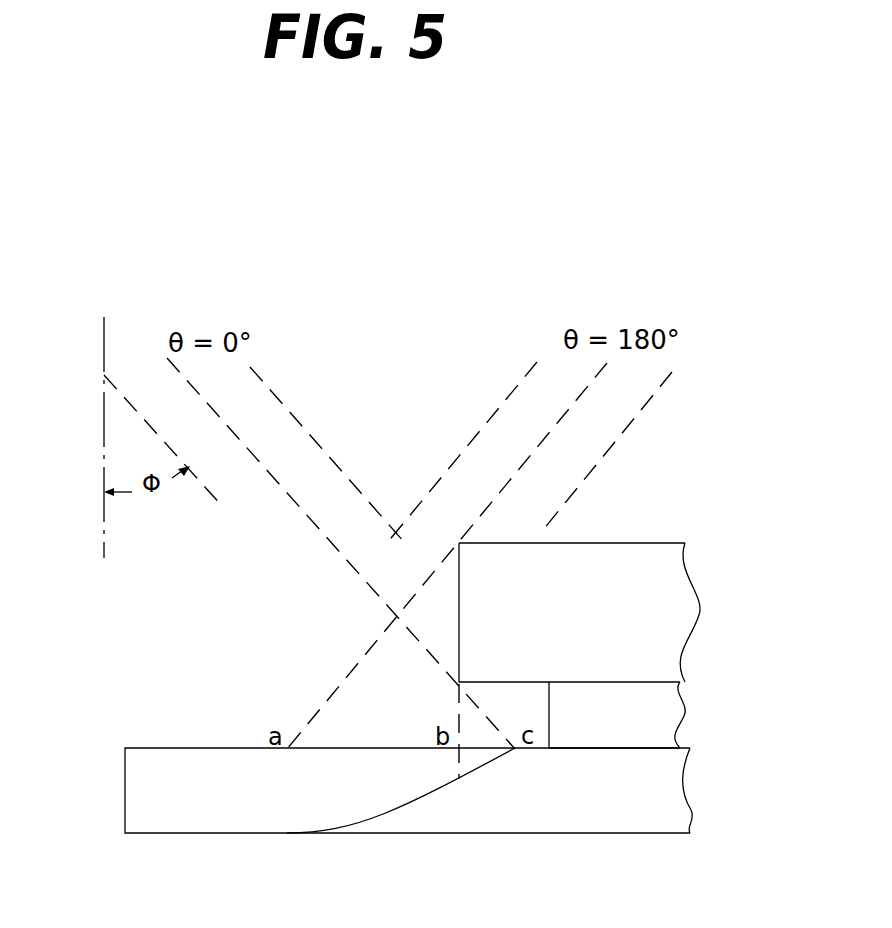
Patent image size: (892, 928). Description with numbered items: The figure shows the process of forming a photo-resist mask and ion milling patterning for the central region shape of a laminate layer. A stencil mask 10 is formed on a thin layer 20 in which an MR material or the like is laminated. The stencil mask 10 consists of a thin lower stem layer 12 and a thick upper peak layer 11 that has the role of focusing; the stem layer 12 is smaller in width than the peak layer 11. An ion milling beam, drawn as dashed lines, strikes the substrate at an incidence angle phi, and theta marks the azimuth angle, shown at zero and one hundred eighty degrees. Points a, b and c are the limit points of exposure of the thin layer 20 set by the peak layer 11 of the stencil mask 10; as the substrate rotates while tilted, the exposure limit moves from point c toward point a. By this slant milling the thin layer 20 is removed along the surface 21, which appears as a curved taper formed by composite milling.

The stencil mask 10 is at (635, 543).
The peak layer 11 is at (636, 624).
The stem layer 12 is at (600, 730).
The thin layer 20 is at (640, 808).
The surface 21 is at (416, 800).